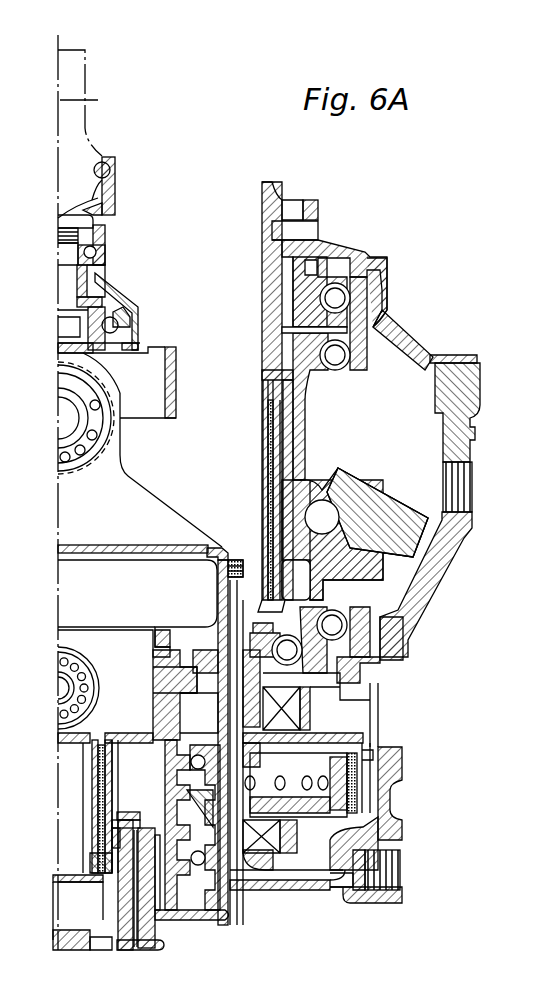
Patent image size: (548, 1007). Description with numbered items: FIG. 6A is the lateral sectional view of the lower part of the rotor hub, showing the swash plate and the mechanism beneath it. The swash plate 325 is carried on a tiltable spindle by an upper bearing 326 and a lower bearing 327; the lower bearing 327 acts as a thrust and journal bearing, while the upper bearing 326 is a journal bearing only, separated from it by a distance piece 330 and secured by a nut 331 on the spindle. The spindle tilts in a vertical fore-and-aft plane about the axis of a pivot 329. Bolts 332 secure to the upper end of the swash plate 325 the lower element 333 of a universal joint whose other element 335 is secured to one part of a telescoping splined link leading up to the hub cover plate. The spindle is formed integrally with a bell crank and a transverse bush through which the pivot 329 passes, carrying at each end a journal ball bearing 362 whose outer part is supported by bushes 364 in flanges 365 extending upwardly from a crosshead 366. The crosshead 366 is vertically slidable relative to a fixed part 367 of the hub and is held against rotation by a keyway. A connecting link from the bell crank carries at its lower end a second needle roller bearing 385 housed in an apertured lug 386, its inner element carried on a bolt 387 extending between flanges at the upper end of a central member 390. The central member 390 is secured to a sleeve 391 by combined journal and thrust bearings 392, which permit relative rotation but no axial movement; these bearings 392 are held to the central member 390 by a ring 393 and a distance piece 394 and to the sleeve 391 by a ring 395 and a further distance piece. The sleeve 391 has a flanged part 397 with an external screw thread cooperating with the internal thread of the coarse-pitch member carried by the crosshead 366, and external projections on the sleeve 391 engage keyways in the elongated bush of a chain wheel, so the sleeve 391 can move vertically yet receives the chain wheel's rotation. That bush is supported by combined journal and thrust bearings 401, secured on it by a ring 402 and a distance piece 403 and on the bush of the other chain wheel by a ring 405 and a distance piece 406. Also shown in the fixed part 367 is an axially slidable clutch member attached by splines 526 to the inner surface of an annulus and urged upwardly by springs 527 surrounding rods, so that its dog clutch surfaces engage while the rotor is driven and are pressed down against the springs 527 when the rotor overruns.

The swash plate 325 is at (136, 345).
The upper bearing 326 is at (96, 250).
The lower bearing 327 is at (124, 314).
The pivot 329 is at (58, 418).
The distance piece 330 is at (98, 268).
The nut 331 is at (100, 221).
The bolts 332 is at (108, 193).
The lower element of universal joint 333 is at (106, 168).
The other element of universal joint 335 is at (65, 100).
The journal ball bearing 362 is at (93, 405).
The bushes 364 is at (170, 395).
The flanges 365 is at (115, 487).
The crosshead 366 is at (130, 545).
The fixed part of the hub 367 is at (393, 643).
The second needle roller bearing 385 is at (58, 650).
The apertured lug 386 is at (72, 657).
The bolt 387 is at (80, 673).
The central member 390 is at (95, 730).
The sleeve 391 is at (92, 772).
The combined journal and thrust bearings 392 is at (92, 750).
The ring 393 is at (82, 883).
The distance piece 394 is at (90, 850).
The ring 395 is at (112, 790).
The flanged part 397 is at (150, 690).
The combined journal and thrust bearings 401 is at (140, 825).
The ring 402 is at (117, 813).
The distance piece 403 is at (140, 838).
The ring 405 is at (140, 920).
The distance piece 406 is at (152, 893).
The splines 526 is at (300, 466).
The springs 527 is at (270, 530).